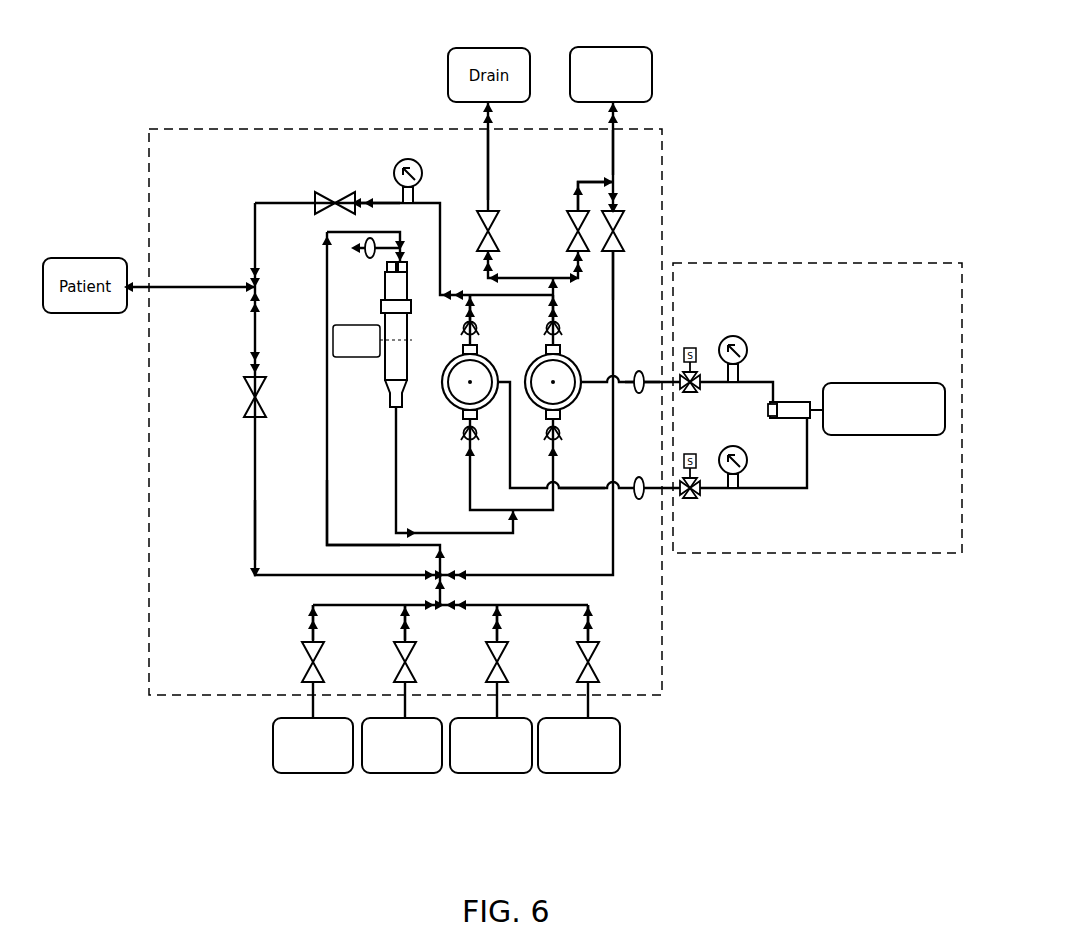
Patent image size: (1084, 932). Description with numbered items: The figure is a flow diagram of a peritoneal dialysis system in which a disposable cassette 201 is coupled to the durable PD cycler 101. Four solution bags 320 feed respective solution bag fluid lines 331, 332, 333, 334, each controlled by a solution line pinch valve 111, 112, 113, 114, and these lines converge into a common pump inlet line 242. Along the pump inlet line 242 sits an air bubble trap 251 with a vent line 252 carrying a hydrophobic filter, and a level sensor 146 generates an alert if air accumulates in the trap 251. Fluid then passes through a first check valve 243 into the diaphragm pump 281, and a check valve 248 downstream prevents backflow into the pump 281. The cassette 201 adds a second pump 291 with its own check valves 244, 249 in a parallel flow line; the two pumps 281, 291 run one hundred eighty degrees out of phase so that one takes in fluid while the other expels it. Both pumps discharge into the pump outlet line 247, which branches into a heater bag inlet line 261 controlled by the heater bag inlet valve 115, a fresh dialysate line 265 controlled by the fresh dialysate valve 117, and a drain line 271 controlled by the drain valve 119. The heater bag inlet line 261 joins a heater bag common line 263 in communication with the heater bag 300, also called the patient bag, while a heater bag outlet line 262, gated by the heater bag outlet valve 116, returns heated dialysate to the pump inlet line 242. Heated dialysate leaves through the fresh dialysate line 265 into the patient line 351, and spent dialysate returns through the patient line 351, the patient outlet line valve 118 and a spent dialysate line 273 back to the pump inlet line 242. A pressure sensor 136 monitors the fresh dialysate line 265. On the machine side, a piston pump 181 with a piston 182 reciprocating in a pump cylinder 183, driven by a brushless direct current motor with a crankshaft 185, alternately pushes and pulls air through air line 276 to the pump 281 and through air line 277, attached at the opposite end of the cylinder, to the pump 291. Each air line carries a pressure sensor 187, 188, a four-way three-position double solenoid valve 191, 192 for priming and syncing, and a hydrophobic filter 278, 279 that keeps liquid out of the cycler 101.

The PD cycler 101 is at (792, 266).
The solution line pinch valve 111 is at (305, 662).
The solution line pinch valve 112 is at (398, 664).
The solution line pinch valve 113 is at (489, 664).
The solution line pinch valve 114 is at (580, 662).
The heater bag inlet valve 115 is at (571, 214).
The heater bag outlet valve 116 is at (622, 230).
The fresh dialysate valve 117 is at (331, 198).
The patient outlet line valve 118 is at (244, 401).
The drain valve 119 is at (480, 215).
The pressure sensor 136 is at (408, 158).
The level sensor 146 is at (358, 358).
The piston pump 181 is at (798, 400).
The piston 182 is at (775, 419).
The pump cylinder 183 is at (767, 408).
The BLDC motor with crankshaft 185 is at (888, 437).
The pressure sensor 187 is at (742, 338).
The second air pressure sensor 188 is at (747, 465).
The 4-way, 3-position double solenoid valve 191 is at (691, 393).
The second 4-way, 3-position double solenoid valve 192 is at (690, 499).
The cassette 201 is at (185, 697).
The pump inlet line 242 is at (325, 528).
The first check valve 243 is at (561, 437).
The check valve 244 is at (465, 440).
The pump outlet line 247 is at (549, 328).
The check valve 248 is at (561, 333).
The check valve 249 is at (462, 333).
The air bubble trap 251 is at (388, 406).
The vent line 252 is at (398, 262).
The heater bag inlet line 261 is at (588, 180).
The heater bag outlet line 262 is at (616, 262).
The heater bag common line 263 is at (616, 160).
The fresh dialysate line 265 is at (385, 201).
The drain line 271 is at (487, 176).
The spent dialysate line 273 is at (250, 540).
The air line 276 is at (664, 398).
The air line 277 is at (598, 492).
The hydrophobic filter 278 is at (639, 368).
The second hydrophobic filter 279 is at (639, 501).
The diaphragm pump 281 is at (575, 397).
The second pump 291 is at (448, 397).
The heater bag 300 is at (628, 50).
The solution bags 320 is at (398, 773).
The solution bag fluid line 331 is at (308, 633).
The solution bag fluid line 332 is at (400, 633).
The solution bag fluid line 333 is at (492, 635).
The solution bag fluid line 334 is at (583, 635).
The patient line 351 is at (195, 291).